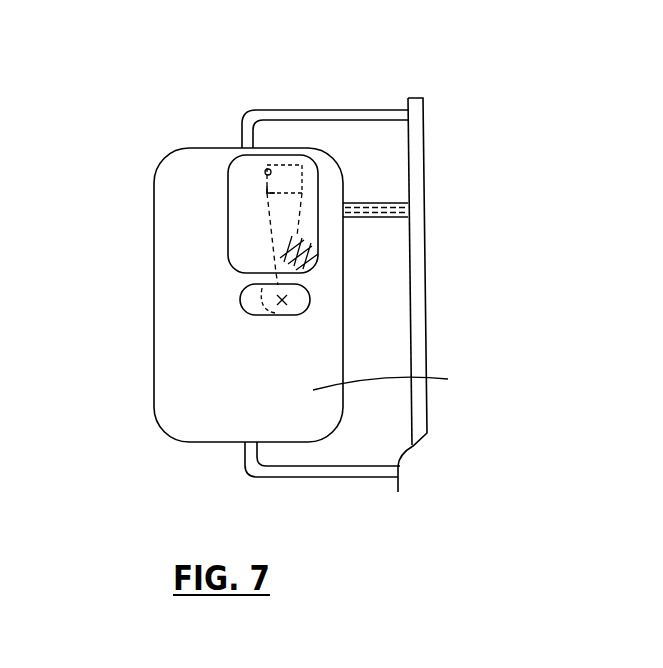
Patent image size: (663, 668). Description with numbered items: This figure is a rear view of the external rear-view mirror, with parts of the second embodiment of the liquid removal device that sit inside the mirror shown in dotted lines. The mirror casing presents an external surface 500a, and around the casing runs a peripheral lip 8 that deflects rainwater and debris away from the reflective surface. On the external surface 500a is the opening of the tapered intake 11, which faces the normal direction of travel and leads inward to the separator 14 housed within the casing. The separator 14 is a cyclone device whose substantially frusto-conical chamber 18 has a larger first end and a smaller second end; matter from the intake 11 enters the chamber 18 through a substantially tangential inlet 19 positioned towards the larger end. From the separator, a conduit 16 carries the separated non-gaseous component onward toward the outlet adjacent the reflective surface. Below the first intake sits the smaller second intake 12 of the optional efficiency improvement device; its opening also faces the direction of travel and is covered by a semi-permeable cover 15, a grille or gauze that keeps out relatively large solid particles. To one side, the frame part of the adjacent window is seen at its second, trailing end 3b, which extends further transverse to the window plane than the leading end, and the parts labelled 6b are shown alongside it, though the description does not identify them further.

The peripheral lip 8 is at (153, 272).
The intake 11 is at (242, 203).
The separator 14 is at (266, 171).
The substantially tangential inlet 19 is at (267, 193).
The chamber 18 is at (292, 205).
The second intake 12 is at (252, 298).
The semi-permeable cover 15 is at (260, 318).
The bracket arms 6b is at (318, 110).
The second end of the frame part 3b is at (423, 170).
The conduit 16 is at (373, 208).
The external surface of the casing 500a is at (425, 384).